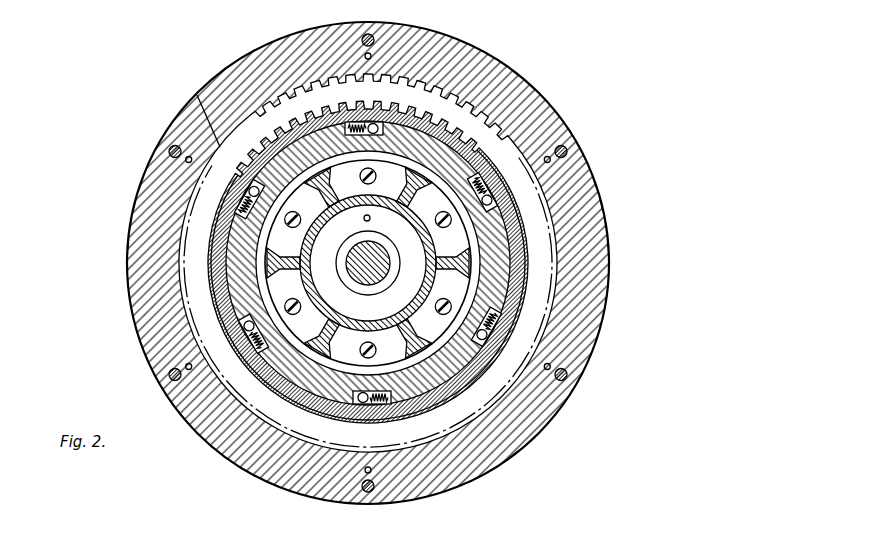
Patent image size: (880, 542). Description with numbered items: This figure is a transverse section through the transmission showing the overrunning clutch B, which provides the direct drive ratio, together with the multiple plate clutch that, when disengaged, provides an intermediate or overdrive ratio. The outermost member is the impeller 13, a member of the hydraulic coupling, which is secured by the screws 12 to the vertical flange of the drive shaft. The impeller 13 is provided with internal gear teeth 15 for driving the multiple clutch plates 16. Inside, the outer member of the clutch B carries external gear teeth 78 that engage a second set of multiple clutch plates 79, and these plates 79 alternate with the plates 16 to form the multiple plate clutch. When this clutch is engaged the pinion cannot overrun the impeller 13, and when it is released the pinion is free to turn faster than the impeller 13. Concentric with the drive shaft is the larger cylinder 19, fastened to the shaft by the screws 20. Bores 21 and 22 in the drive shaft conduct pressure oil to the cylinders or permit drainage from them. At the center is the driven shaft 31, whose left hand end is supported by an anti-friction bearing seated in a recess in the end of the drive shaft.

The screws 12 is at (364, 36).
The impeller 13 is at (539, 106).
The internal gear teeth 15 is at (452, 88).
The multiple clutch plates 16 is at (263, 138).
The larger cylinder 19 is at (420, 231).
The screws 20 is at (441, 214).
The bore 21 is at (364, 218).
The bore 22 is at (372, 59).
The driven shaft 31 is at (347, 270).
The external gear teeth 78 is at (238, 176).
The multiple clutch plates 79 is at (220, 147).
The overrunning clutch B is at (488, 201).